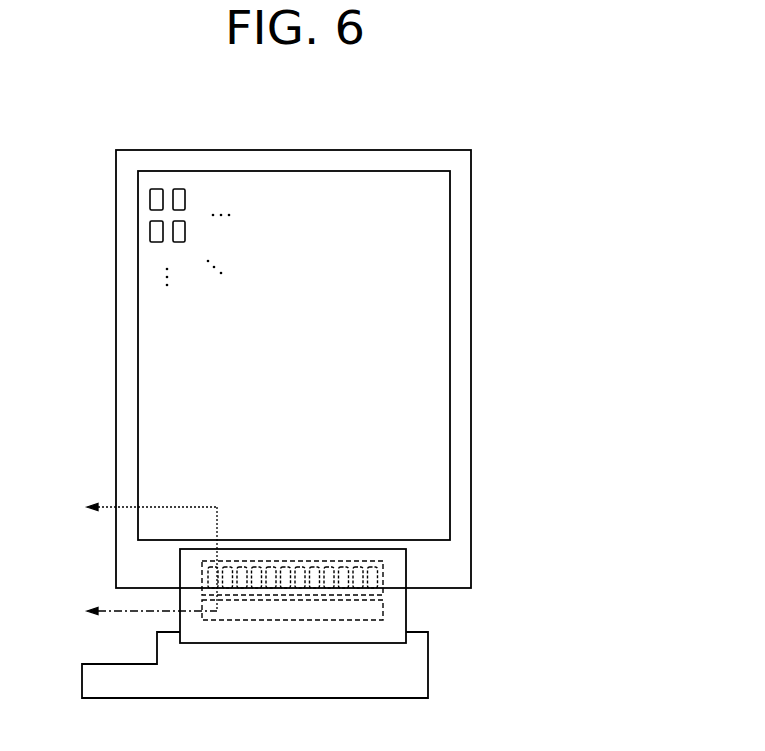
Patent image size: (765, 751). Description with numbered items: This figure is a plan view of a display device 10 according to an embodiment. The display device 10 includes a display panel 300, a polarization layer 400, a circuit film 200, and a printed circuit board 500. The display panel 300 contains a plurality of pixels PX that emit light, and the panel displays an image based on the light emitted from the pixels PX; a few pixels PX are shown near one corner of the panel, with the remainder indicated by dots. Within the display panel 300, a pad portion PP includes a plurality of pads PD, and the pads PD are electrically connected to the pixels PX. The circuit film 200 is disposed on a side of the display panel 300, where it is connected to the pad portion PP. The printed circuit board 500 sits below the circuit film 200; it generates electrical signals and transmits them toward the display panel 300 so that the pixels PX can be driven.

The display device 10 is at (497, 137).
The display panel 300 is at (466, 300).
The polarization layer 400 is at (434, 385).
The pixel PX is at (150, 195).
The circuit film 200 is at (401, 611).
The pad PD is at (383, 568).
The pad portion PP is at (383, 585).
The printed circuit board 500 is at (420, 665).